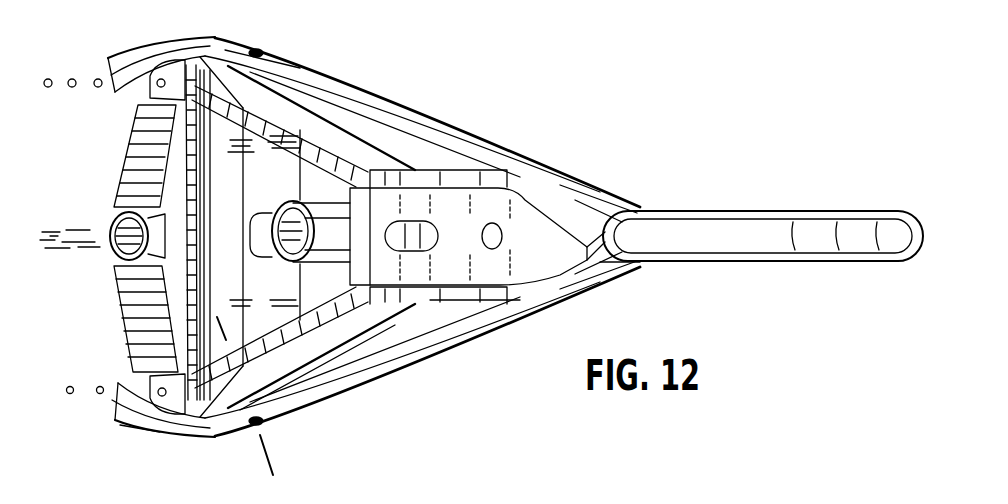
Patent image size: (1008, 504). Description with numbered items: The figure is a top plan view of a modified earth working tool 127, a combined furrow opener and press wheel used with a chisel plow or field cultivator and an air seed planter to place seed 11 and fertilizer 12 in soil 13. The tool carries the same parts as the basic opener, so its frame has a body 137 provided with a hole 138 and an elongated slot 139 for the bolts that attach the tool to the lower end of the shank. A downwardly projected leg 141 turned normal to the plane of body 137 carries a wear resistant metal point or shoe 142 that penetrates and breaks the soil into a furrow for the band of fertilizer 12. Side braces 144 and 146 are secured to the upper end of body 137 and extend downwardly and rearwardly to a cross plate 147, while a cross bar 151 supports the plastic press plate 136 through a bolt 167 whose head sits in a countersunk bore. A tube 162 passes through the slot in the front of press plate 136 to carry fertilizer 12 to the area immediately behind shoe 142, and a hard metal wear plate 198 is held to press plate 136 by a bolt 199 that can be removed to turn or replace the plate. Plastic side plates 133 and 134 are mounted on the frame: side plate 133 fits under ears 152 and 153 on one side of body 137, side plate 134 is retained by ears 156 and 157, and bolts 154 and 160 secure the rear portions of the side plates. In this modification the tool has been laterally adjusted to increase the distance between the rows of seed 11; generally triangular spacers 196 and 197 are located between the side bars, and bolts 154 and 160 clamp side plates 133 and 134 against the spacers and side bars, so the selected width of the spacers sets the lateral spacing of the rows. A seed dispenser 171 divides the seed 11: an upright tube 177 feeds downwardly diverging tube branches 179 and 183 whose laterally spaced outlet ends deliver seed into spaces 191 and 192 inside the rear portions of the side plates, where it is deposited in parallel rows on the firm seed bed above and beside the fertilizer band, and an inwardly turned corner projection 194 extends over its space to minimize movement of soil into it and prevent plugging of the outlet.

The seed 11 is at (70, 79).
The fertilizer 12 is at (78, 233).
The soil 13 is at (222, 328).
The earth working tool 127 is at (511, 102).
The side plate 133 is at (433, 333).
The side plate 134 is at (435, 137).
The press plate 136 is at (318, 400).
The body 137 is at (548, 170).
The hole 138 is at (503, 235).
The elongated slot 139 is at (408, 232).
The leg 141 is at (597, 205).
The point or shoe 142 is at (800, 225).
The side brace 144 is at (345, 100).
The side brace 146 is at (368, 385).
The cross plate 147 is at (232, 62).
The cross bar 151 is at (274, 299).
The ear 152 is at (470, 305).
The ear 153 is at (627, 275).
The bolt 154 is at (258, 426).
The ear 156 is at (490, 150).
The ear 157 is at (628, 195).
The bolt 160 is at (258, 52).
The tube 162 is at (292, 262).
The bolt 167 is at (258, 222).
The seed dispenser 171 is at (112, 171).
The upright tube 177 is at (108, 250).
The tube branch 179 is at (140, 147).
The tube branch 183 is at (140, 312).
The space 191 is at (175, 68).
The space 192 is at (168, 405).
The corner projection 194 is at (120, 420).
The spacer 196 is at (300, 62).
The spacer 197 is at (227, 430).
The wear plate 198 is at (157, 93).
The bolt 199 is at (148, 383).